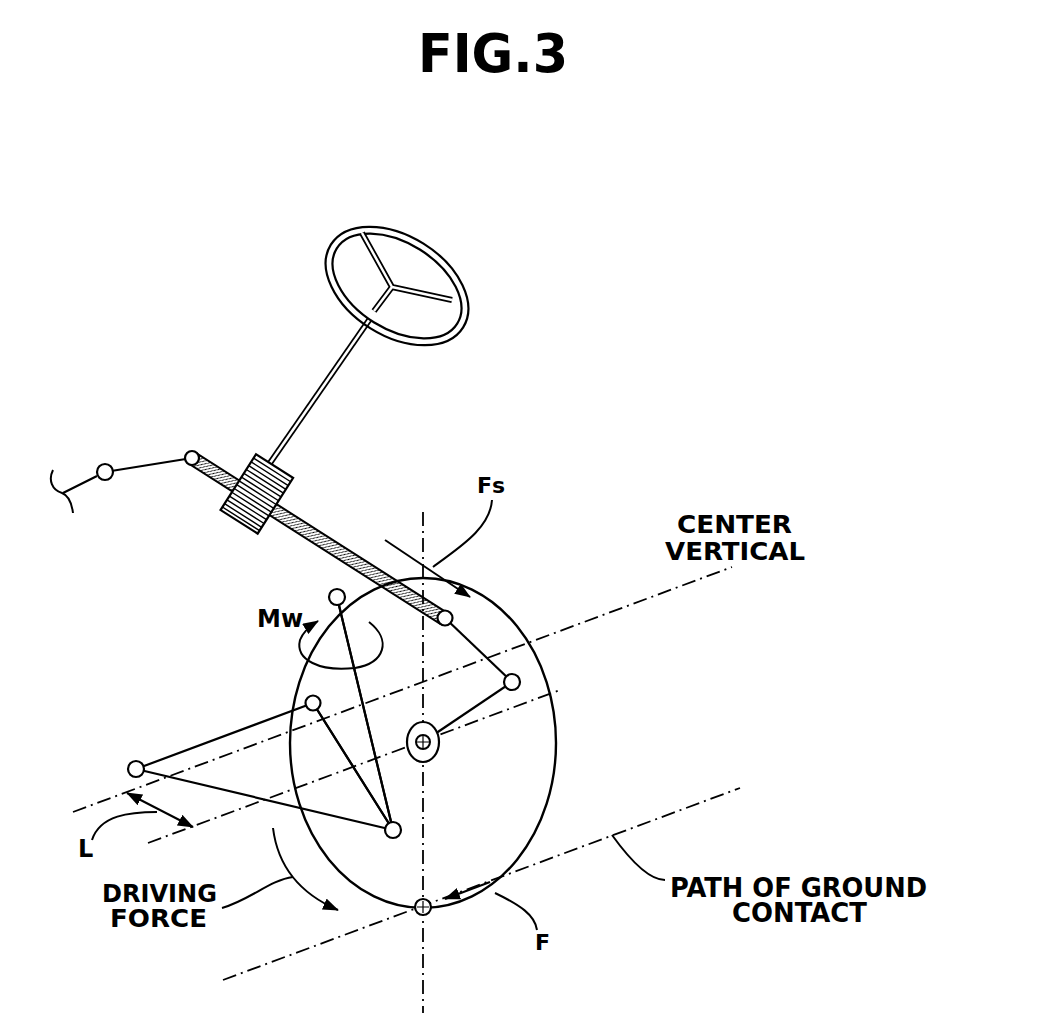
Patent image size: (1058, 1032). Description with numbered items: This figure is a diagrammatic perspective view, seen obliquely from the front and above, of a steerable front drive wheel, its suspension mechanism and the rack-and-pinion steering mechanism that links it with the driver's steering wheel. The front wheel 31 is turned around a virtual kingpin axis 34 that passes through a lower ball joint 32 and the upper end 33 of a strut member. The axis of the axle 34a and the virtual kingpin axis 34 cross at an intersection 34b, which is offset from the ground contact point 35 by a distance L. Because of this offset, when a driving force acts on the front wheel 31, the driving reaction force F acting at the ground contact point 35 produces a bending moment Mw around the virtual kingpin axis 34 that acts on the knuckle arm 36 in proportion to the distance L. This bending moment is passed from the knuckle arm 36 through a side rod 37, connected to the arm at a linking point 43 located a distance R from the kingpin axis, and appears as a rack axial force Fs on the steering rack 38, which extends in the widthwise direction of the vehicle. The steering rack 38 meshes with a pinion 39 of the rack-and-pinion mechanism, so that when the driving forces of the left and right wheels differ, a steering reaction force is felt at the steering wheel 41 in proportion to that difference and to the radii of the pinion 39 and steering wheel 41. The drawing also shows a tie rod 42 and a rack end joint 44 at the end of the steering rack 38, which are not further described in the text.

The front wheel 31 is at (560, 748).
The lower ball joint 32 is at (392, 840).
The upper end of strut member 33 is at (330, 592).
The virtual kingpin axis 34 is at (382, 783).
The axle 34a is at (365, 745).
The intersection 34b is at (305, 696).
The ground contact point 35 is at (428, 914).
The knuckle arm 36 is at (476, 724).
The side rod 37 is at (480, 650).
The steering rack 38 is at (330, 535).
The pinion 39 is at (252, 458).
The steering wheel 41 is at (447, 267).
The tie rod 42 is at (200, 742).
The point linking knuckle arm with side rod 43 is at (521, 682).
The rack end joint 44 is at (462, 612).